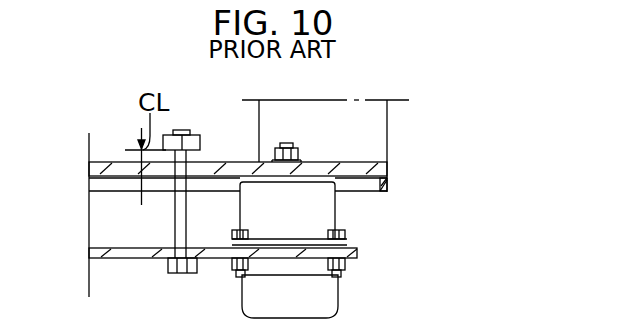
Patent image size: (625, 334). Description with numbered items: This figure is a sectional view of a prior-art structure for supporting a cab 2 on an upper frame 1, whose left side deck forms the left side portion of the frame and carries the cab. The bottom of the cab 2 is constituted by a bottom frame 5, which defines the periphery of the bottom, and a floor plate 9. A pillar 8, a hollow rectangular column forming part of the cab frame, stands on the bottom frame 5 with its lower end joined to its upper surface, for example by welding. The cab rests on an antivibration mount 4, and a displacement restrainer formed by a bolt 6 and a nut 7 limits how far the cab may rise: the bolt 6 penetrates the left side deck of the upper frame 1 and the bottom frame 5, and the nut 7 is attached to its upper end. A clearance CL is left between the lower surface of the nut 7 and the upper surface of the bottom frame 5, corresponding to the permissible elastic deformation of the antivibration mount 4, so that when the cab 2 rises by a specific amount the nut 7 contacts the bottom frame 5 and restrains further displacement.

The upper frame 1 is at (130, 259).
The cab 2 is at (402, 171).
The antivibration mount 4 is at (339, 293).
The bottom frame 5 is at (106, 161).
The bolt 6 is at (174, 222).
The nut 7 is at (199, 143).
The pillar 8 is at (389, 118).
The floor plate 9 is at (355, 183).